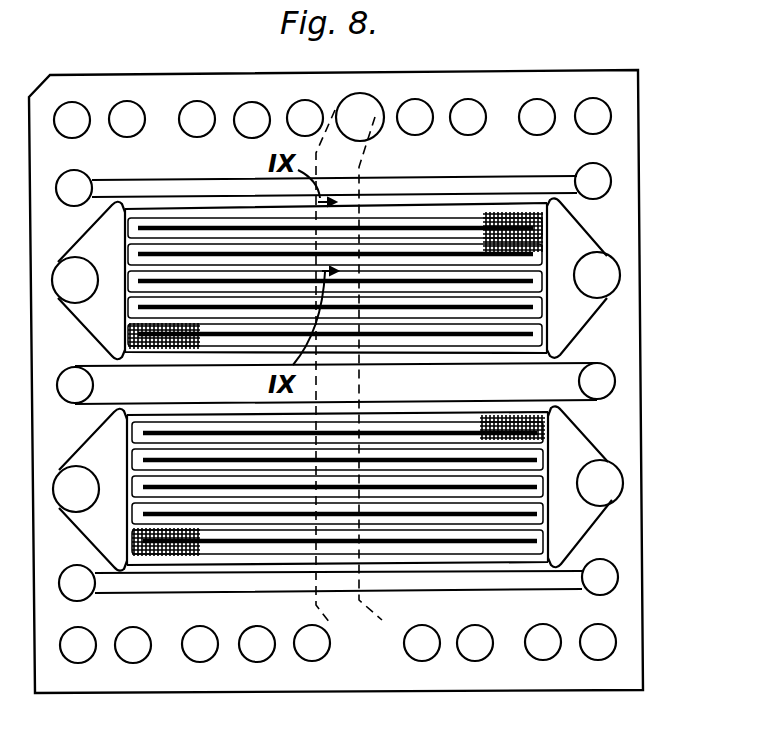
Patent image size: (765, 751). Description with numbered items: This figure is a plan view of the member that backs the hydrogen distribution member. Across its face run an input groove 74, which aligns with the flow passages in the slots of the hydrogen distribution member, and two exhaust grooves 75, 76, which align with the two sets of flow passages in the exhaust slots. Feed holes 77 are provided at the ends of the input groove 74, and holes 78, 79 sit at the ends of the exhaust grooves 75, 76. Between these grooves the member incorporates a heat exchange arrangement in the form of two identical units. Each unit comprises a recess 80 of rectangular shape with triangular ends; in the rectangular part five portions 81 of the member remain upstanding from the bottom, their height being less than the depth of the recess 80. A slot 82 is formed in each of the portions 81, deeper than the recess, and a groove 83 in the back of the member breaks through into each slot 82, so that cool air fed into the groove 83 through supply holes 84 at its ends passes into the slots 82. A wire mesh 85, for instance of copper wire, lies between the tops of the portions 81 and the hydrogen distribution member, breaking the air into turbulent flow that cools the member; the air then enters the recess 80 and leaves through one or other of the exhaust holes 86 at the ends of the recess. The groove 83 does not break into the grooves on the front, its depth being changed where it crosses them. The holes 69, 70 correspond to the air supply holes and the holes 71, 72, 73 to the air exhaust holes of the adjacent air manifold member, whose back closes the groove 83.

The air supply hole 69 is at (418, 113).
The air supply hole 70 is at (247, 110).
The exhaust hole 71 is at (548, 650).
The exhaust hole 72 is at (312, 655).
The exhaust hole 73 is at (202, 657).
The input groove 74 is at (545, 375).
The exhaust groove 75 is at (513, 182).
The exhaust groove 76 is at (528, 582).
The feed hole 77 is at (597, 372).
The exhaust groove hole 78 is at (593, 178).
The exhaust groove hole 79 is at (605, 577).
The recess 80 is at (583, 458).
The upstanding portion 81 is at (137, 508).
The slot 82 is at (535, 453).
The groove 83 is at (355, 388).
The supply hole 84 is at (365, 113).
The wire mesh 85 is at (132, 547).
The exhaust hole 86 is at (608, 495).